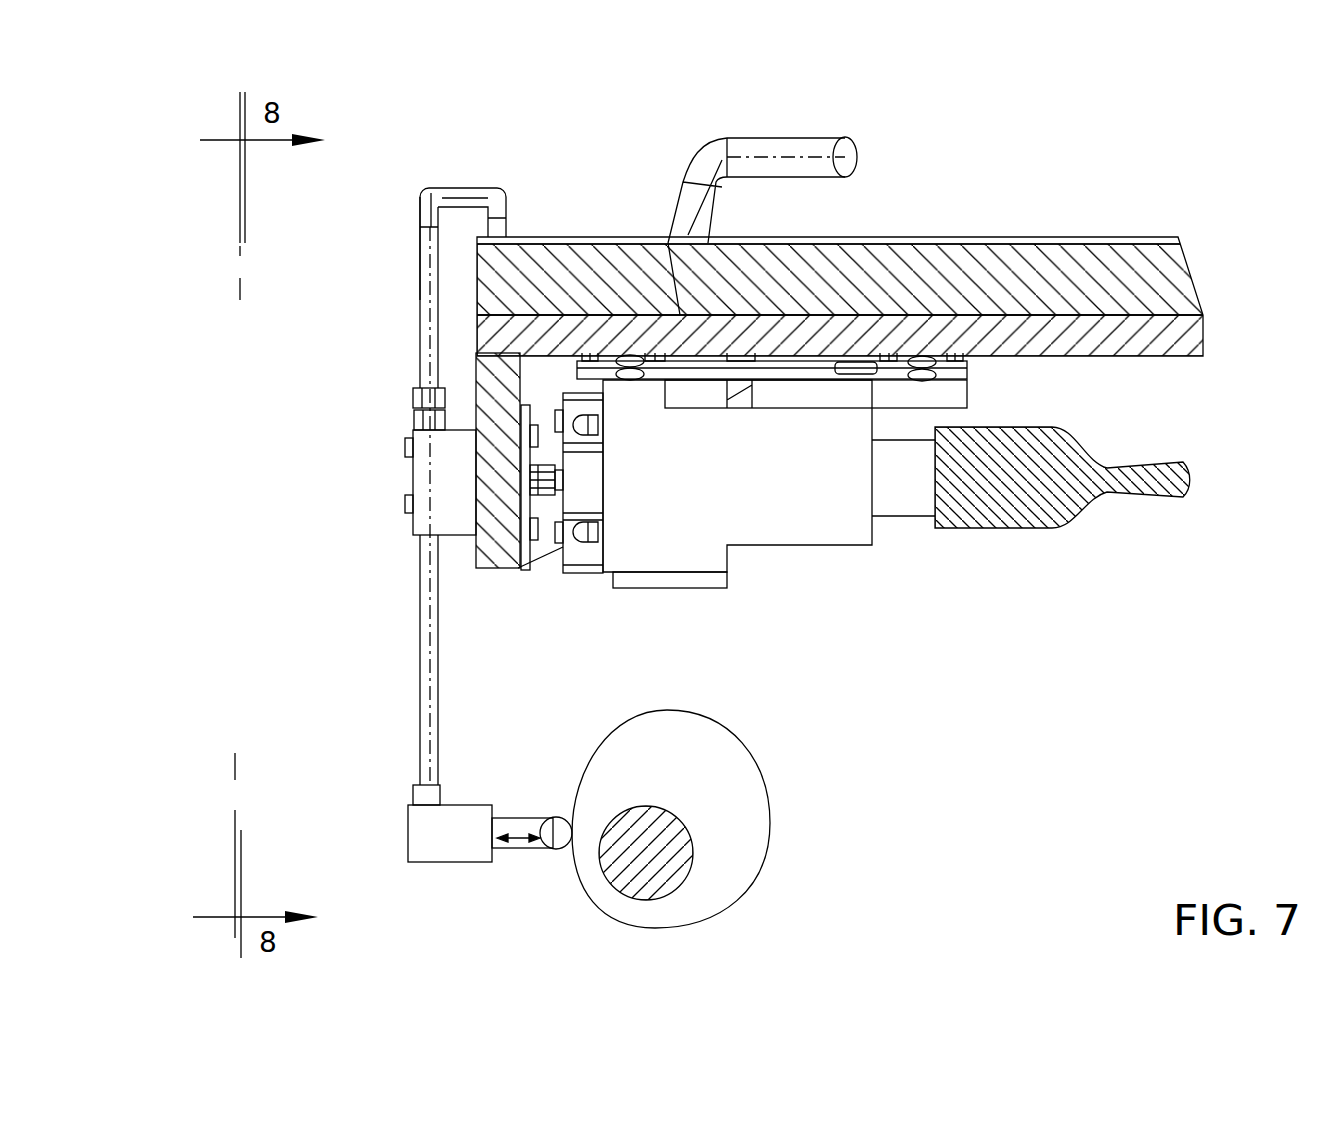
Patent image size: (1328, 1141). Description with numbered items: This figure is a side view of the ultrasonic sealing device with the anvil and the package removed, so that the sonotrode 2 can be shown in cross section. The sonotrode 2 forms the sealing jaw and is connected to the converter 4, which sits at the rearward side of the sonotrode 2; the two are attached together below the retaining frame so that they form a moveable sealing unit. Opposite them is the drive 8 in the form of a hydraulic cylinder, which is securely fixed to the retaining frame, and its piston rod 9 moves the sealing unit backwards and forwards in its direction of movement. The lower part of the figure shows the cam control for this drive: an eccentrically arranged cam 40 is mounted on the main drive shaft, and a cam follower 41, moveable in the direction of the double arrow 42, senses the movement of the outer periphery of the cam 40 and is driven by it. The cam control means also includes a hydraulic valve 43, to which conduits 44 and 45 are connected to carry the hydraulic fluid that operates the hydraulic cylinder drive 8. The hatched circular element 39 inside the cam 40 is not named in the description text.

The sonotrode 2 is at (1020, 488).
The converter 4 is at (760, 520).
The drive 8 is at (452, 502).
The piston rod 9 is at (548, 482).
The shaft 39 is at (668, 838).
The cam 40 is at (708, 748).
The cam follower 41 is at (553, 818).
The double arrow 42 is at (525, 840).
The hydraulic valve 43 is at (425, 838).
The conduit 44 is at (470, 190).
The conduit 45 is at (420, 283).